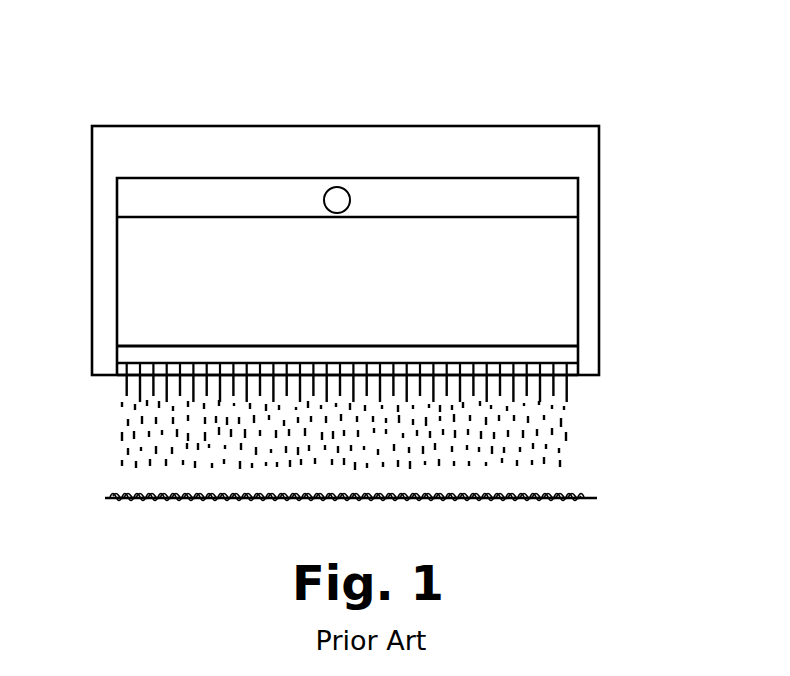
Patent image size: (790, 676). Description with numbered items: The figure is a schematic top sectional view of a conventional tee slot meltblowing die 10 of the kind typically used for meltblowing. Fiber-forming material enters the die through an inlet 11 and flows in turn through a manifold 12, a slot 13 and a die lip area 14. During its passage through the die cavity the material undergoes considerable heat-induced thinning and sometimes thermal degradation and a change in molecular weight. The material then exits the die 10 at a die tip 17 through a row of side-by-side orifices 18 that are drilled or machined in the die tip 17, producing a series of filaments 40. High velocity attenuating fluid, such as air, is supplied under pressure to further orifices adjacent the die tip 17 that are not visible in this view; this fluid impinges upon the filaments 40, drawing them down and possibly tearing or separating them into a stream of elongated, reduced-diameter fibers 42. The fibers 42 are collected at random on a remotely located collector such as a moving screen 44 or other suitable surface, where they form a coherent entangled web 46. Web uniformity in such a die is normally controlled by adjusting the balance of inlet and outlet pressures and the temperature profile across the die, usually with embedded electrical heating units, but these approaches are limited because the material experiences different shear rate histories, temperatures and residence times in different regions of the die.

The tee slot die 10 is at (510, 84).
The inlet 11 is at (338, 187).
The manifold 12 is at (552, 198).
The slot 13 is at (553, 280).
The die lip area 14 is at (570, 355).
The die tip 17 is at (545, 378).
The orifices 18 is at (140, 364).
The filaments 40 is at (124, 383).
The fibers 42 is at (120, 432).
The moving screen 44 is at (567, 498).
The web 46 is at (568, 497).